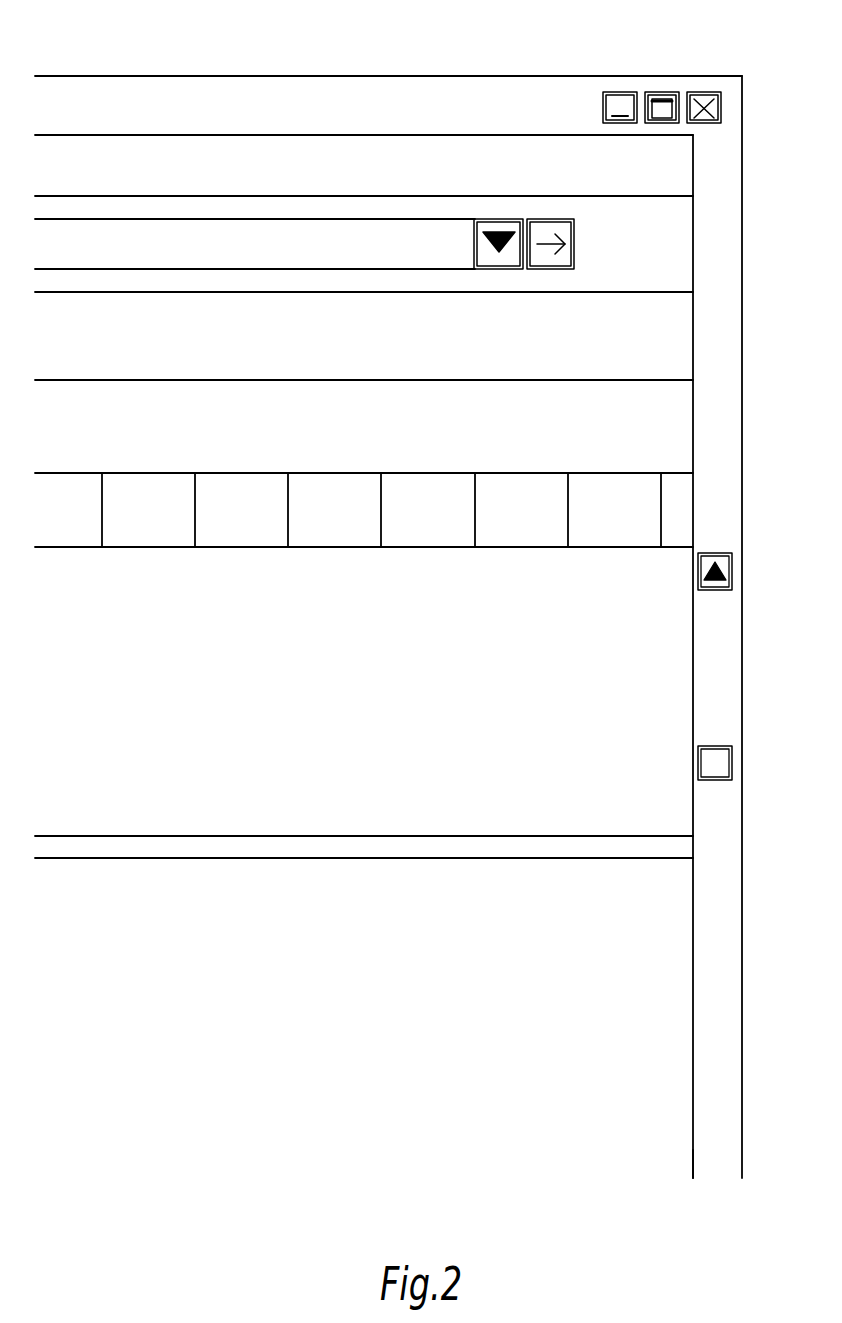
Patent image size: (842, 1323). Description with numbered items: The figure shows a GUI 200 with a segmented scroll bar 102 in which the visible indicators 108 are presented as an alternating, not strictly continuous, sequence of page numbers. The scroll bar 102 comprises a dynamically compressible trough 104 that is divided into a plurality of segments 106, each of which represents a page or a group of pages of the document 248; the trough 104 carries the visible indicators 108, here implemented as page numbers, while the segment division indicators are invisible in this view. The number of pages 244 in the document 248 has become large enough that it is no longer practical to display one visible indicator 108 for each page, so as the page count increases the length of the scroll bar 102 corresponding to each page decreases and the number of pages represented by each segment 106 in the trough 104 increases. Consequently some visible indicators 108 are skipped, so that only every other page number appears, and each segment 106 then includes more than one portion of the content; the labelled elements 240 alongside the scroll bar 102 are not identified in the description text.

The browser window user interface 200 is at (742, 36).
The navigation bar / page list frame 102 is at (693, 903).
The bottom of navigation bar 104 is at (710, 1160).
The page group 106 is at (757, 618).
The page entry 108 is at (726, 884).
The page entry indicator 240 is at (706, 1008).
The page indicator 244 is at (558, 702).
The content region 248 is at (625, 788).